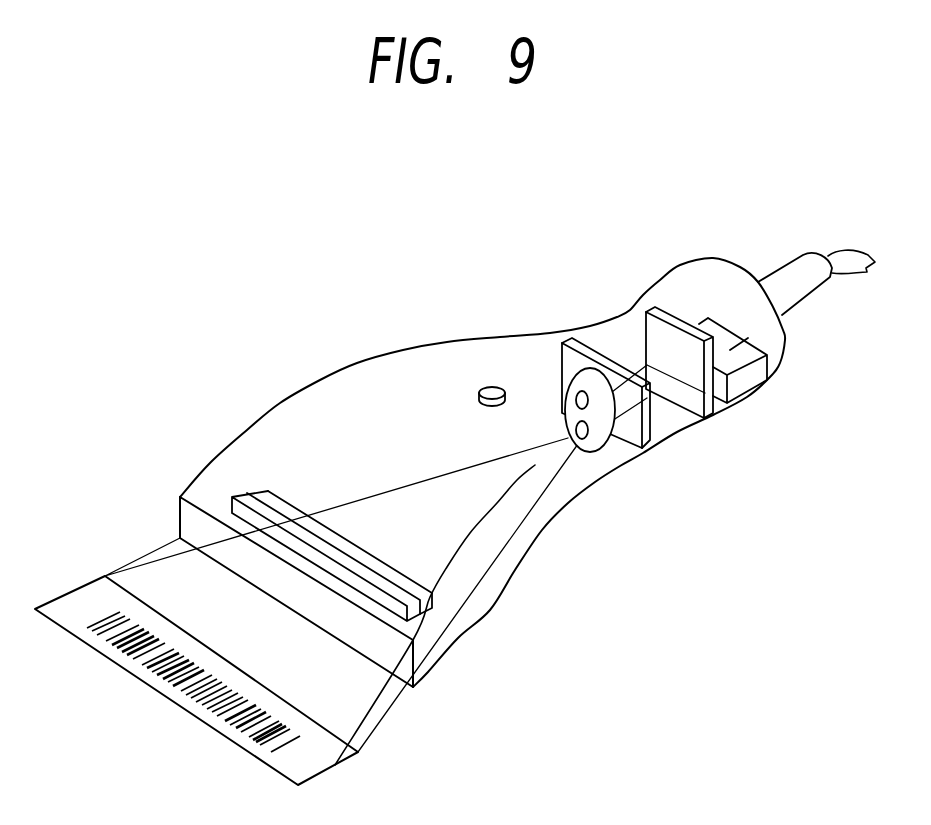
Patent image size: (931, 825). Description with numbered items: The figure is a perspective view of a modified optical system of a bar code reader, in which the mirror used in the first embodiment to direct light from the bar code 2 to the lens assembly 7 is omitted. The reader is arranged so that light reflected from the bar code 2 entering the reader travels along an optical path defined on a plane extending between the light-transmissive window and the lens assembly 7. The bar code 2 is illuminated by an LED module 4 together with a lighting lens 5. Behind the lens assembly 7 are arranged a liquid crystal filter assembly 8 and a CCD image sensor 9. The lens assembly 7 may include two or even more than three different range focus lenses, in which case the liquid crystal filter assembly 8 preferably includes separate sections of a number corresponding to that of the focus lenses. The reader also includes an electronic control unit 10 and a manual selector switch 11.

The bar code 2 is at (56, 596).
The LED module 4 is at (257, 494).
The lighting lens 5 is at (248, 496).
The lens assembly 7 is at (562, 357).
The liquid crystal filter assembly 8 is at (593, 343).
The CCD image sensor 9 is at (667, 300).
The electronic control unit (ECU) 10 is at (720, 326).
The manual selector switch 11 is at (493, 393).